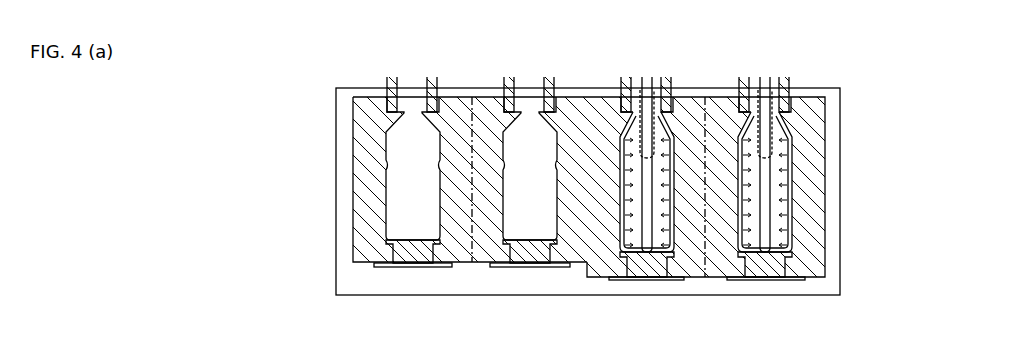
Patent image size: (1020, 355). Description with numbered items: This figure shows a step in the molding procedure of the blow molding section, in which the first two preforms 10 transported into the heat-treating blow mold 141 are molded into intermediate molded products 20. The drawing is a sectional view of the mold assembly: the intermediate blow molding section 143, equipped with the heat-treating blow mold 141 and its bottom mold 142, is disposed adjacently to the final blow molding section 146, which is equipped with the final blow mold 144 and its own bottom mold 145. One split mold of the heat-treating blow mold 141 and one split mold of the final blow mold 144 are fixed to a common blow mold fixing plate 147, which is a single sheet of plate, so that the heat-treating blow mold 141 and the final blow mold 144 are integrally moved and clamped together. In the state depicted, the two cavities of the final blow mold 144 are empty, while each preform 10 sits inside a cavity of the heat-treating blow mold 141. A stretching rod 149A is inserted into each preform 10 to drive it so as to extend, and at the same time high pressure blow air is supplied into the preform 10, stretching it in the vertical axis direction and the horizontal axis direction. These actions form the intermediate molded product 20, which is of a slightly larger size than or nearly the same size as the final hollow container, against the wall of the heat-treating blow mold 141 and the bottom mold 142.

The preform 10 is at (790, 155).
The intermediate molded product 20 is at (793, 213).
The heat-treating blow mold 141 is at (813, 138).
The bottom mold 142 is at (647, 259).
The intermediate blow molding section 143 is at (799, 54).
The final blow mold 144 is at (365, 128).
The bottom mold 145 is at (527, 267).
The final blow molding section 146 is at (362, 63).
The blow mold fixing plate 147 is at (713, 283).
The stretching rod 149A is at (767, 259).